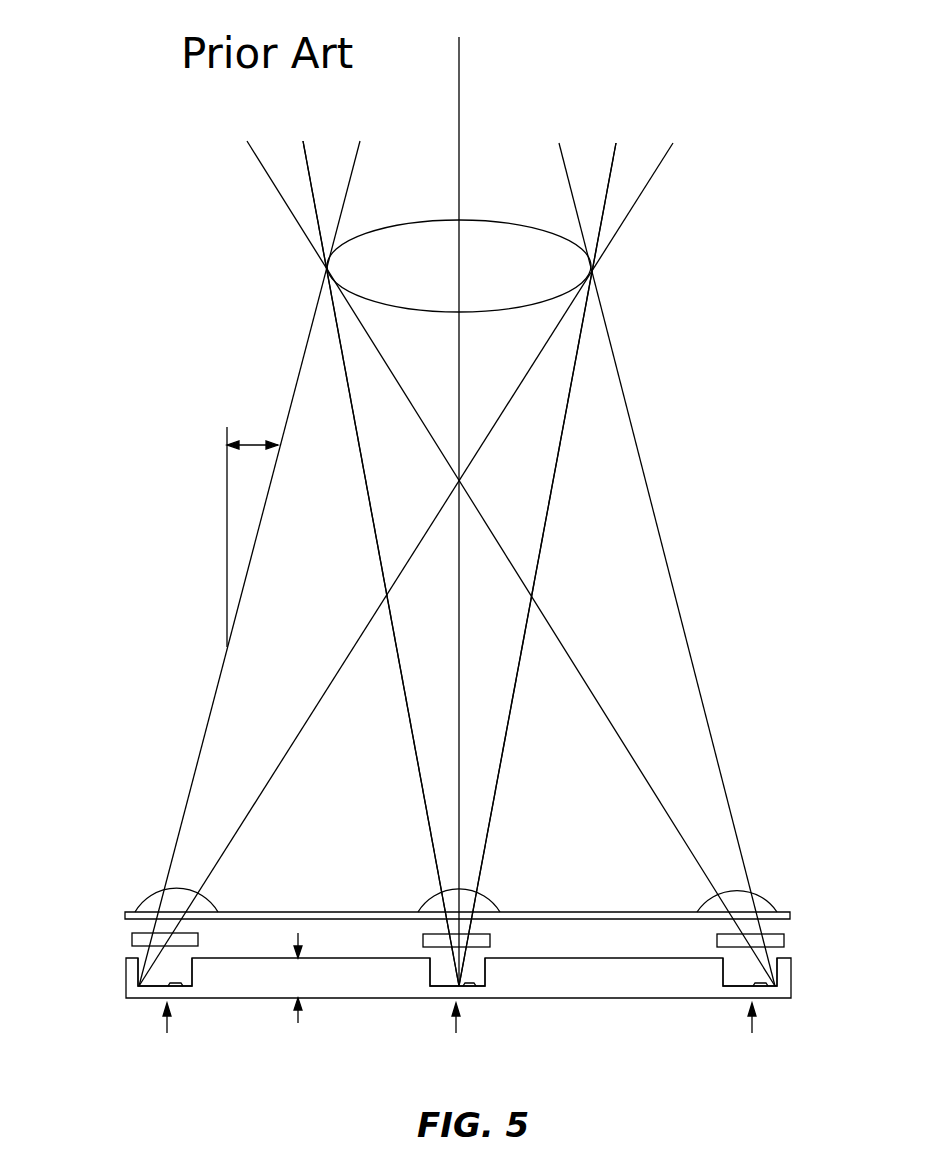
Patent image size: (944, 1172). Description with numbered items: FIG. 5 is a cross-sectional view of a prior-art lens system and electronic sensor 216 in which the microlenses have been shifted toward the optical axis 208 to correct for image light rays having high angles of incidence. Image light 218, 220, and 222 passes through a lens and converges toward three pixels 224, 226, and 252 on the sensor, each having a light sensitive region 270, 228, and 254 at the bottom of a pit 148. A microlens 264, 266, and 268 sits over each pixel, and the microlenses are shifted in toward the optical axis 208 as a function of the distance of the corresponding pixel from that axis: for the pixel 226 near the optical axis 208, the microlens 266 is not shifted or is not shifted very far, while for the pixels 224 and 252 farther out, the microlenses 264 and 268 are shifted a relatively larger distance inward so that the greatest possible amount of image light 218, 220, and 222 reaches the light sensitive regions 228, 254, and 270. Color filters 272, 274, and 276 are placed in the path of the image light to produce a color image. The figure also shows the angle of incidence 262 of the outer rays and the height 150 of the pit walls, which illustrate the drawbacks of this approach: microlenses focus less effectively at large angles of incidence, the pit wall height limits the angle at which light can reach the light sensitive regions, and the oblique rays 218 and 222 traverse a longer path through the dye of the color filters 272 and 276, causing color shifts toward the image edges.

The optical axis 208 is at (459, 97).
The angle of incidence 262 is at (250, 443).
The image light 222 is at (192, 770).
The image light 220 is at (417, 770).
The image light 218 is at (640, 770).
The electronic sensor 216 is at (112, 947).
The microlens 268 is at (210, 900).
The microlens 266 is at (490, 900).
The microlens 264 is at (770, 900).
The color filter 272 is at (136, 932).
The color filter 274 is at (430, 932).
The color filter 276 is at (723, 932).
The height 150 is at (298, 982).
The pits 148 is at (170, 970).
The light sensitive region 254 is at (183, 986).
The light sensitive region 228 is at (476, 986).
The light sensitive region 270 is at (775, 987).
The pixel 252 is at (167, 1034).
The pixel 226 is at (456, 1034).
The pixel 224 is at (752, 1034).